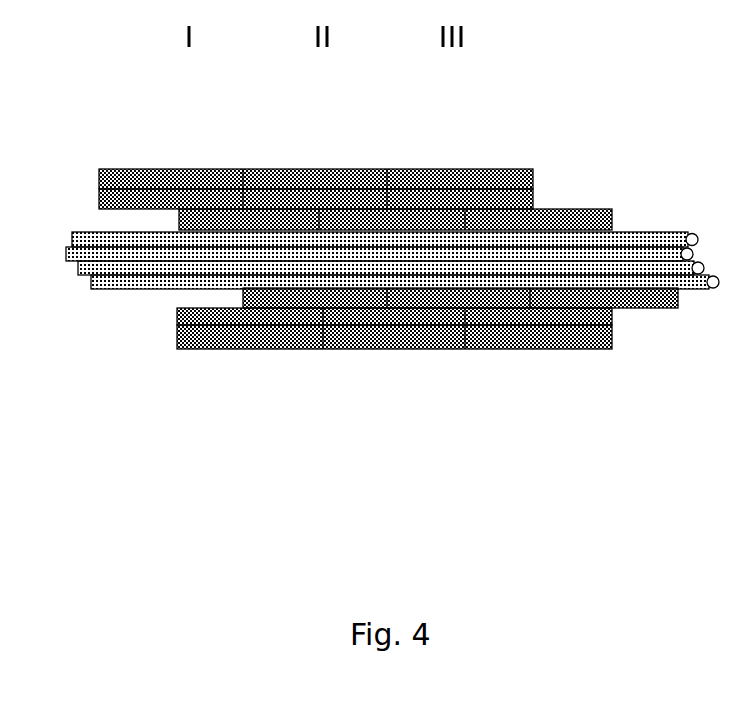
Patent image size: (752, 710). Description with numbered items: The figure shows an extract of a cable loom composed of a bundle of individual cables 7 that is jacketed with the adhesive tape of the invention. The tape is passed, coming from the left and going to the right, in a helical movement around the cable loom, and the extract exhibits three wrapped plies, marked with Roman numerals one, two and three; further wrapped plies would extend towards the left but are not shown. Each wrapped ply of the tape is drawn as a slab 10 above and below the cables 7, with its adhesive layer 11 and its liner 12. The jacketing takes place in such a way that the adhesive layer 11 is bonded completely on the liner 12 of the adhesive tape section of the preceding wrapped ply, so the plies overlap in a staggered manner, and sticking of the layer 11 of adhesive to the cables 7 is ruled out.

The individual cables 7 is at (648, 243).
The outer plate 10 is at (120, 167).
The adhesive layer 11 is at (100, 201).
The liner 12 is at (212, 215).